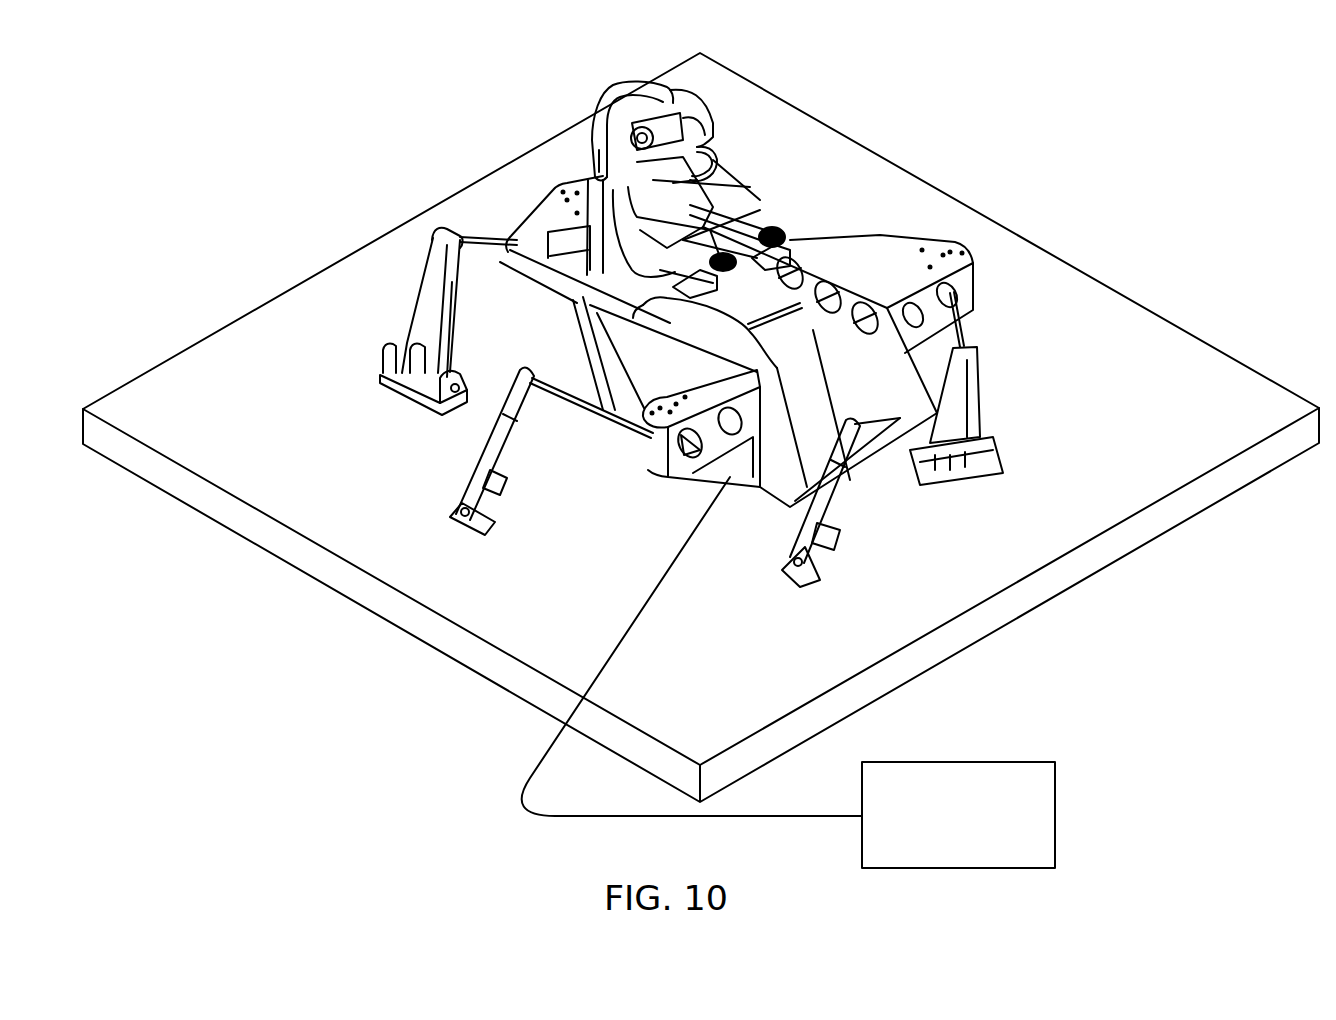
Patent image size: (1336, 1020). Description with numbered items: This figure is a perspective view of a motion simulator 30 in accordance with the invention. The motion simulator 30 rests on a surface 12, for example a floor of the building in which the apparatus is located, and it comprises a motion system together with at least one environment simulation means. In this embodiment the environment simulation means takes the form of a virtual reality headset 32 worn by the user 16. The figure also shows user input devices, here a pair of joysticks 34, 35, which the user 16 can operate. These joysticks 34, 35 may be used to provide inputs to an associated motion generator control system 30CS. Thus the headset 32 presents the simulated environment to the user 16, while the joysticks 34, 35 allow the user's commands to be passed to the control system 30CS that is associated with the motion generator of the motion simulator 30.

The surface 12 is at (1245, 425).
The user 16 is at (621, 111).
The motion simulator 30 is at (849, 308).
The virtual reality headset 32 is at (667, 180).
The joystick 34 is at (737, 274).
The joystick 35 is at (803, 240).
The motion generator control system 30CS is at (788, 672).